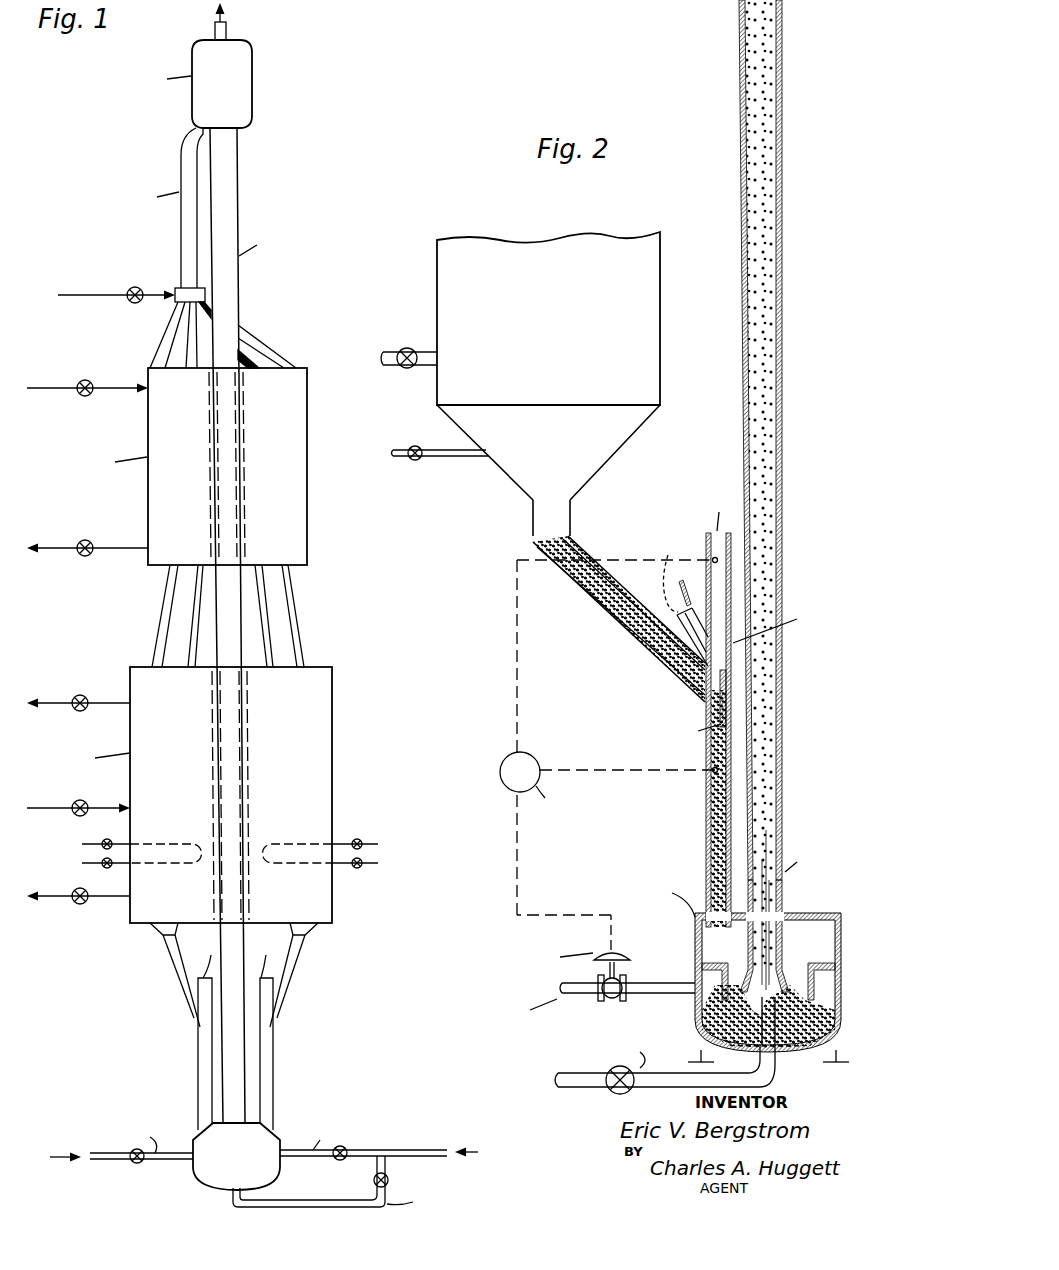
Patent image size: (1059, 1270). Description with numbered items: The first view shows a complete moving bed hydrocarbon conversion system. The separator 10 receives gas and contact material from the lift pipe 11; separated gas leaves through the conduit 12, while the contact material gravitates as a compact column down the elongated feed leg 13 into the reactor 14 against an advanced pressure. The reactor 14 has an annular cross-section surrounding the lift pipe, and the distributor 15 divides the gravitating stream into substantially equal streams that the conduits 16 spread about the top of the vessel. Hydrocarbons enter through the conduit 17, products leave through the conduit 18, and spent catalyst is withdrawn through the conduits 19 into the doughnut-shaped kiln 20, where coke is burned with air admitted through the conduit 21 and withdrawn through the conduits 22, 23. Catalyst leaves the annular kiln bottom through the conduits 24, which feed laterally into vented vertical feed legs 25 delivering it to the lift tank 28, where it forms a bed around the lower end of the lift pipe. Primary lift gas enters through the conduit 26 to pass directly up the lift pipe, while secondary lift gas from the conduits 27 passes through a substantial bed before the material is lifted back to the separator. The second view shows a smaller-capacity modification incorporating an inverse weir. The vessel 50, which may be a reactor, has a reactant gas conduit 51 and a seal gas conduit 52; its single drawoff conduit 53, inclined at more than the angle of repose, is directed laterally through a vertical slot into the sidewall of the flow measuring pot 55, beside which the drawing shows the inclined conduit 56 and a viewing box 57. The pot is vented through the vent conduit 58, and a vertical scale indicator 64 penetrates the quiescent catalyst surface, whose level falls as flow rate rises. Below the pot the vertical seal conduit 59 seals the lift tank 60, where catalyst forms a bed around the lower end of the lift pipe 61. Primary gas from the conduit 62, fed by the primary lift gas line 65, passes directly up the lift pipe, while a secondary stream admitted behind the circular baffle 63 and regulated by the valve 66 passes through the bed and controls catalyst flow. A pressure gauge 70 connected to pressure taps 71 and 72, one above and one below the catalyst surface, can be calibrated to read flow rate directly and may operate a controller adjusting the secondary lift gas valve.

In FIG. 1, the separator 10 is at (240, 83).
In FIG. 1, the lift pipe 11 is at (240, 287).
In FIG. 1, the conduit 12 is at (228, 27).
In FIG. 1, the feed leg 13 is at (180, 152).
In FIG. 1, the reactor 14 is at (300, 423).
In FIG. 1, the distributor 15 is at (177, 288).
In FIG. 1, the conduit 16 is at (173, 331).
In FIG. 1, the conduit 17 is at (57, 392).
In FIG. 1, the conduit 18 is at (59, 539).
In FIG. 1, the conduits 19 is at (187, 617).
In FIG. 1, the kiln 20 is at (315, 712).
In FIG. 1, the conduit 21 is at (63, 799).
In FIG. 1, the conduit 22 is at (55, 701).
In FIG. 1, the conduit 23 is at (52, 903).
In FIG. 1, the conduits 24 is at (177, 973).
In FIG. 1, the feed legs 25 is at (202, 1053).
In FIG. 1, the primary lift gas conduit 26 is at (352, 1187).
In FIG. 1, the secondary lift gas conduits 27 is at (290, 1156).
In FIG. 1, the lift tank 28 is at (196, 1183).
In FIG. 2, the vessel 50 is at (548, 318).
In FIG. 2, the conduit 51 is at (430, 351).
In FIG. 2, the seal gas conduit 52 is at (440, 449).
In FIG. 2, the drawoff conduit 53 is at (540, 548).
In FIG. 2, the flow measuring pot 55 is at (733, 588).
In FIG. 2, the inclined chute 56 is at (668, 658).
In FIG. 2, the viewing box 57 is at (694, 594).
In FIG. 2, the vent conduit 58 is at (731, 533).
In FIG. 2, the seal conduit 59 is at (708, 817).
In FIG. 2, the lift tank 60 is at (805, 913).
In FIG. 2, the lift pipe 61 is at (784, 892).
In FIG. 2, the conduit 62 is at (782, 1052).
In FIG. 2, the circular baffle 63 is at (825, 962).
In FIG. 2, the scale indicator 64 is at (731, 700).
In FIG. 2, the primary lift gas line 65 is at (677, 1058).
In FIG. 2, the valve 66 is at (617, 1000).
In FIG. 2, the pressure gauge 70 is at (499, 772).
In FIG. 2, the pressure tap 71 is at (704, 547).
In FIG. 2, the pressure tap 72 is at (712, 765).